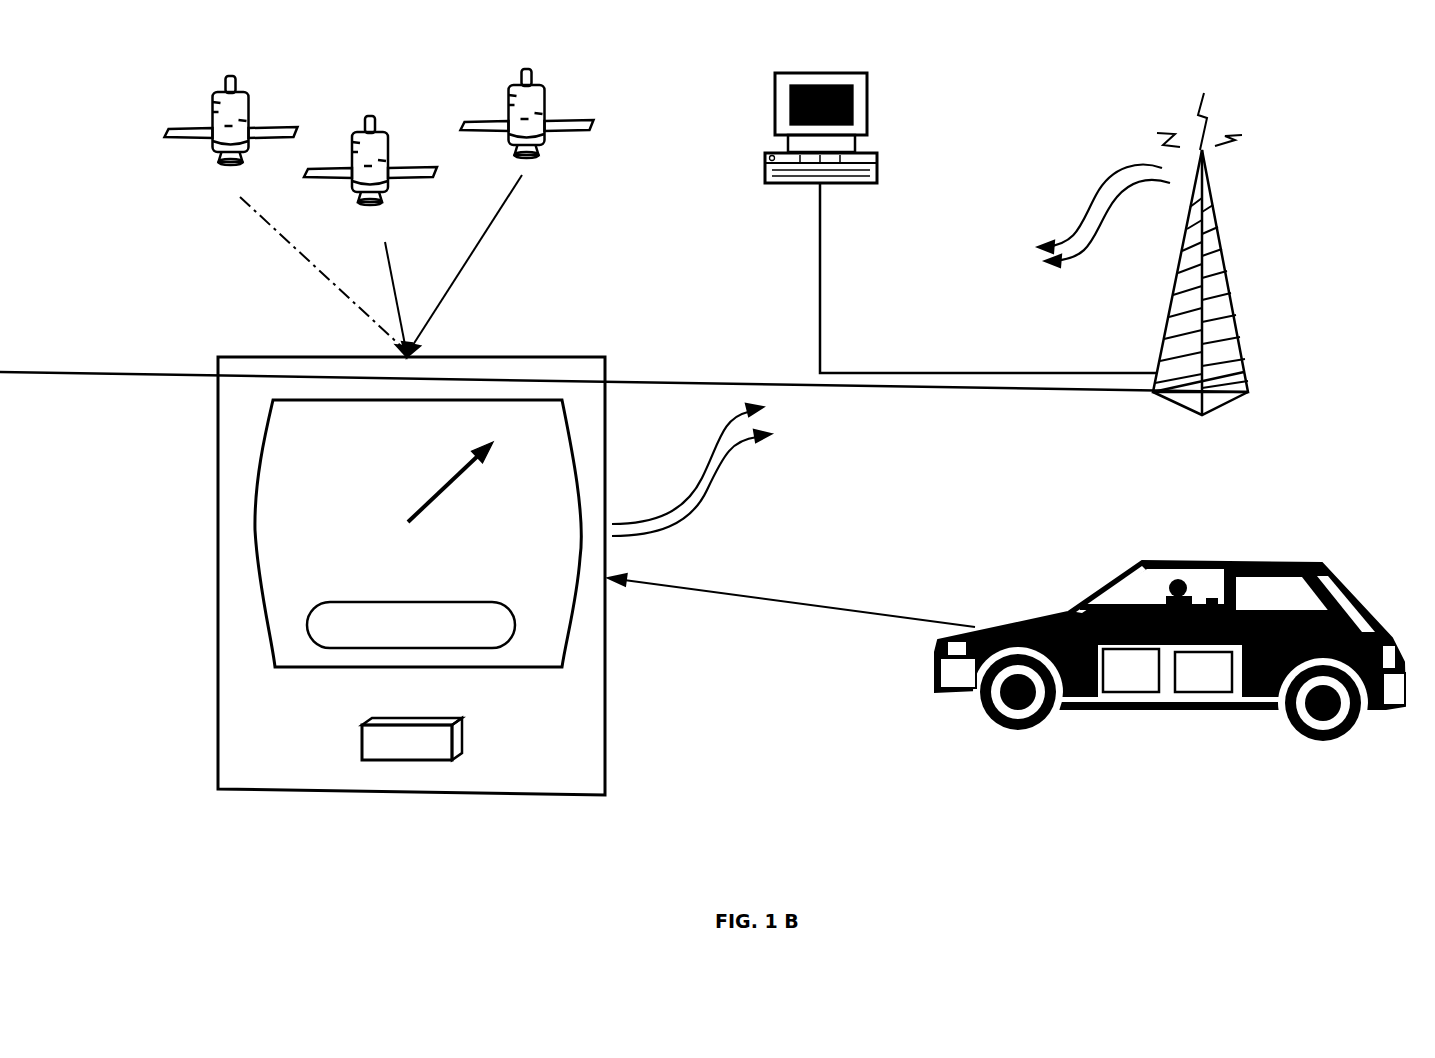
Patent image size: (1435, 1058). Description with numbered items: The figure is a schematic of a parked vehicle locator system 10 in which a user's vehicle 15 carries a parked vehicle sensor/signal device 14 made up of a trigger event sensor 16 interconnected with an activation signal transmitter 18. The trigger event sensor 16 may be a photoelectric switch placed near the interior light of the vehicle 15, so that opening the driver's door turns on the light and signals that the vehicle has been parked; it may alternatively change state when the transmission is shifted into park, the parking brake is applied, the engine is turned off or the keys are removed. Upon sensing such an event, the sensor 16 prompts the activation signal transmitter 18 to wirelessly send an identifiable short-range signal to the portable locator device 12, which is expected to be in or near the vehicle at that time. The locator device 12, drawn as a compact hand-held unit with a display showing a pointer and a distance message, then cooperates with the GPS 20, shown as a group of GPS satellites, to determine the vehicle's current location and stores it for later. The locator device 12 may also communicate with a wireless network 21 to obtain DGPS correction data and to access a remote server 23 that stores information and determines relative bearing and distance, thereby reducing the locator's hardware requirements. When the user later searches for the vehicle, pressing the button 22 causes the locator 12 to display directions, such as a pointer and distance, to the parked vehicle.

The vehicle location system 10 is at (775, 742).
The portable locator device 12 is at (610, 432).
The parked vehicle sensor/signal device 14 is at (1155, 712).
The vehicle 15 is at (1170, 706).
The trigger event sensor 16 is at (1272, 815).
The activation signal transmitter 18 is at (1053, 818).
The GPS 20 is at (257, 106).
The wireless network 21 is at (1208, 170).
The button 22 is at (390, 750).
The remote server 23 is at (855, 73).